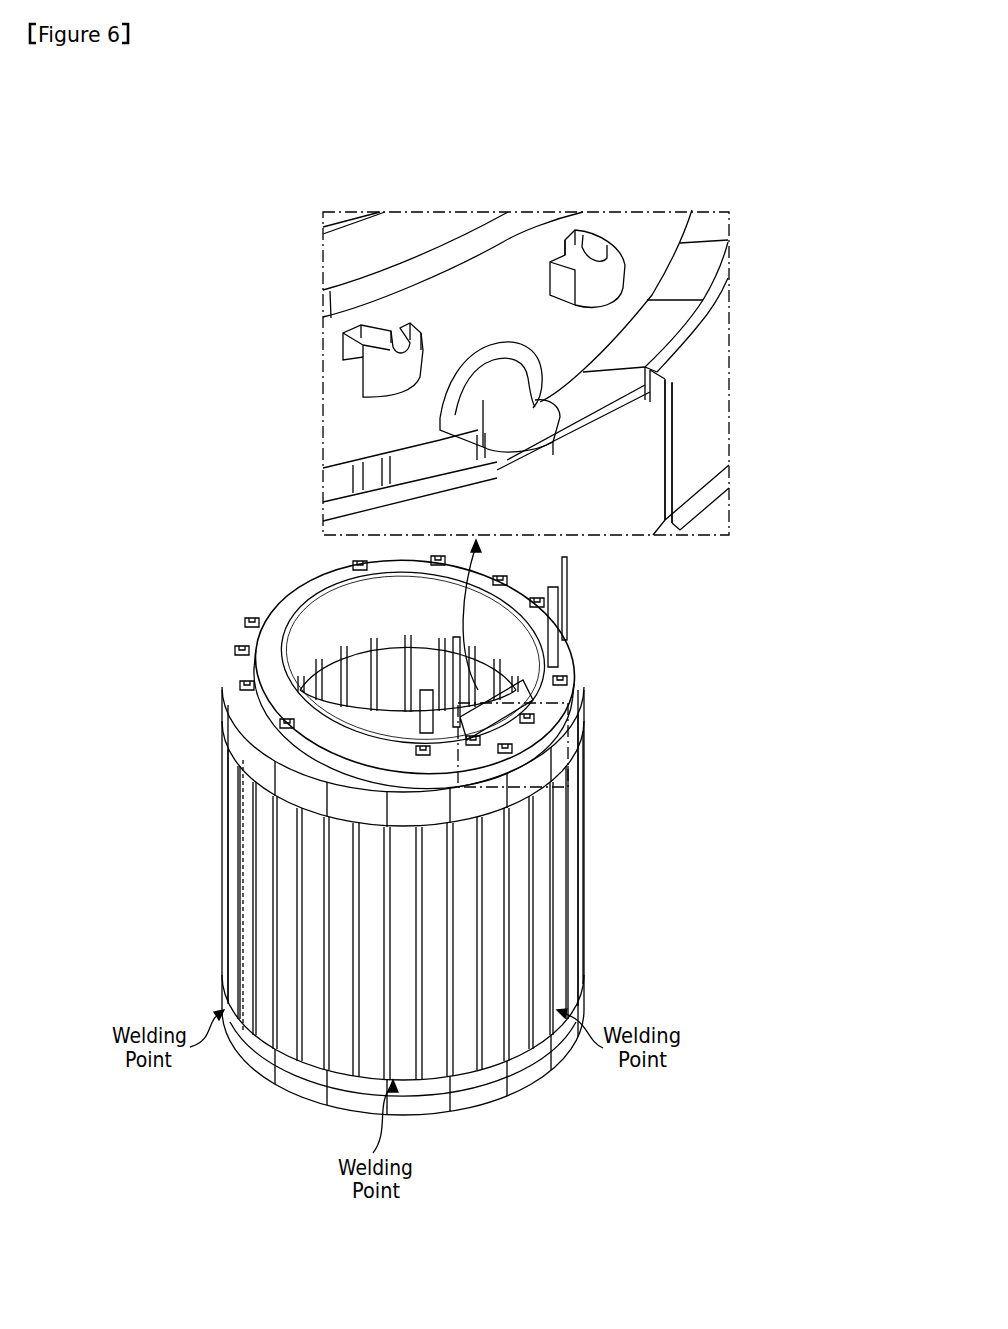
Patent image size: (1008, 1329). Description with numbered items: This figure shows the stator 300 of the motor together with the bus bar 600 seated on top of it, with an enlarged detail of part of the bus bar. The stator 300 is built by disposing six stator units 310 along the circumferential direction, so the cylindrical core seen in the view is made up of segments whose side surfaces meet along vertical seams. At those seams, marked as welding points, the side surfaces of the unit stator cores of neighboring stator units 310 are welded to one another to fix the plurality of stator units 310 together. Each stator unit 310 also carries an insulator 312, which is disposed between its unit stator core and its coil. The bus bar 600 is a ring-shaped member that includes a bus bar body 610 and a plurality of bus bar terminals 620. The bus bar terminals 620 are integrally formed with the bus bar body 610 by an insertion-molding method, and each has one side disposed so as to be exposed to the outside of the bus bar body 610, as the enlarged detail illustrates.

The stator 300 is at (612, 834).
The stator unit 310 is at (248, 1080).
The insulator 312 is at (713, 420).
The bus bar 600 is at (289, 578).
The bus bar body 610 is at (635, 235).
The bus bar terminal 620 is at (226, 636).